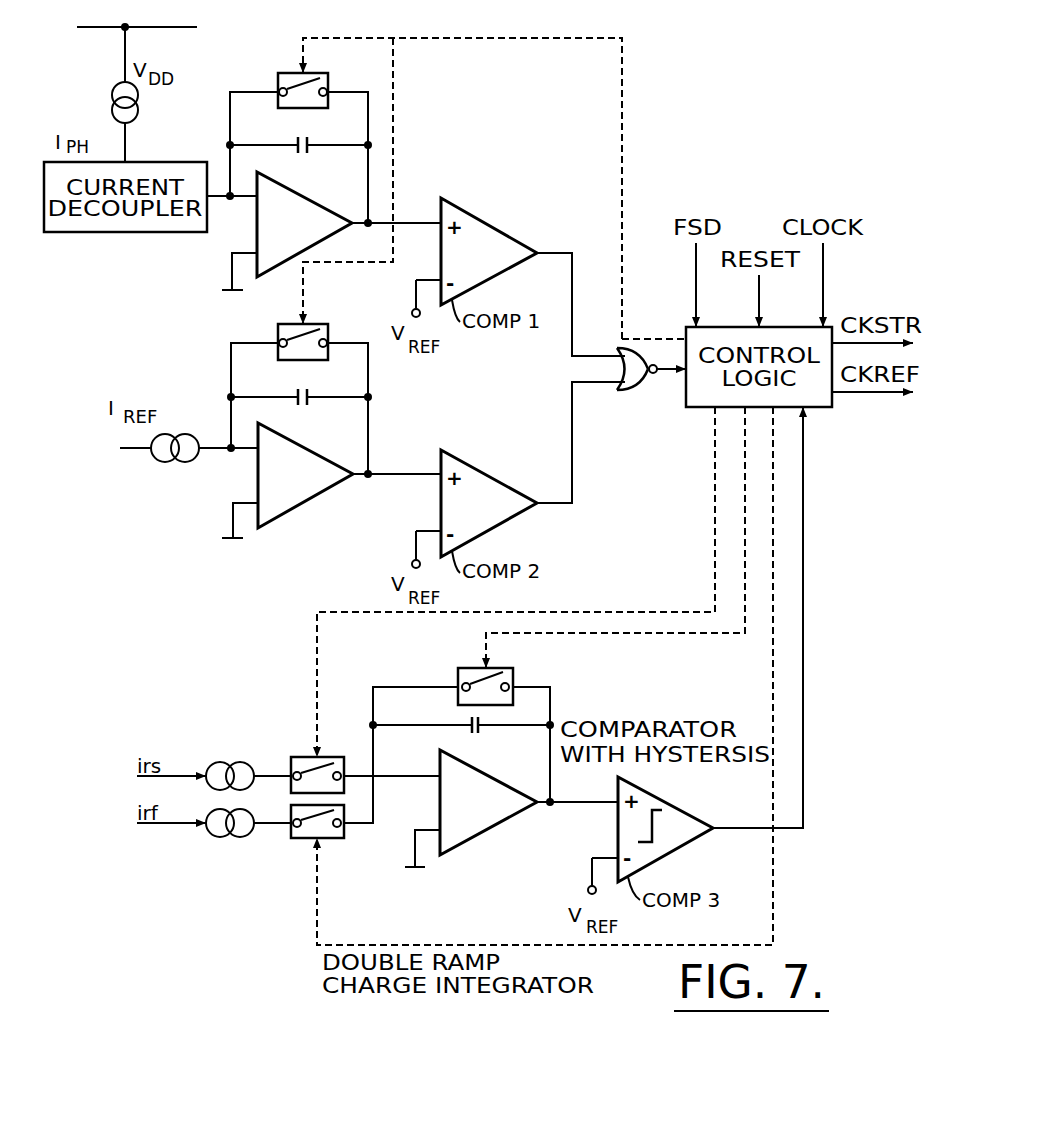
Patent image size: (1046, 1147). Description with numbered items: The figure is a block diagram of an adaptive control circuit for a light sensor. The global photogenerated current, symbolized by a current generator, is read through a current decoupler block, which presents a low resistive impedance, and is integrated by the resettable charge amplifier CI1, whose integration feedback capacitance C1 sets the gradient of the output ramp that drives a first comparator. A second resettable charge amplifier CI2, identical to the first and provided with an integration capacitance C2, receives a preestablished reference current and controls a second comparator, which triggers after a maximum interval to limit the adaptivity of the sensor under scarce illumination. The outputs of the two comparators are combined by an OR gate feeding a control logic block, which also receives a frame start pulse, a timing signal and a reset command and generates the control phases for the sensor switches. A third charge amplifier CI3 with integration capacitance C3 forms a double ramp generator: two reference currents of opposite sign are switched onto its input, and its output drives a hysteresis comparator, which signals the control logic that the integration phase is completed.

The integration capacitance C1 is at (319, 154).
The integration capacitance C2 is at (319, 406).
The integration capacitance C3 is at (491, 734).
The resettable charge amplifier CI1 is at (304, 224).
The second resettable charge amplifier CI2 is at (305, 475).
The third charge amplifier CI3 is at (488, 802).